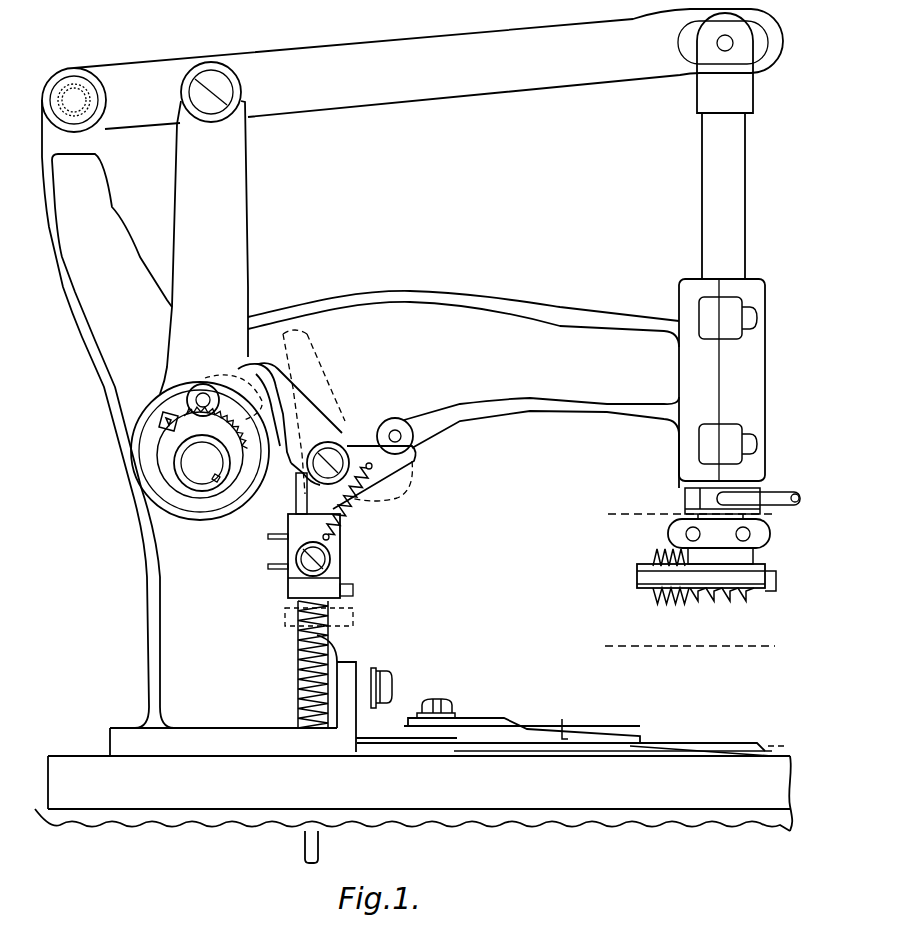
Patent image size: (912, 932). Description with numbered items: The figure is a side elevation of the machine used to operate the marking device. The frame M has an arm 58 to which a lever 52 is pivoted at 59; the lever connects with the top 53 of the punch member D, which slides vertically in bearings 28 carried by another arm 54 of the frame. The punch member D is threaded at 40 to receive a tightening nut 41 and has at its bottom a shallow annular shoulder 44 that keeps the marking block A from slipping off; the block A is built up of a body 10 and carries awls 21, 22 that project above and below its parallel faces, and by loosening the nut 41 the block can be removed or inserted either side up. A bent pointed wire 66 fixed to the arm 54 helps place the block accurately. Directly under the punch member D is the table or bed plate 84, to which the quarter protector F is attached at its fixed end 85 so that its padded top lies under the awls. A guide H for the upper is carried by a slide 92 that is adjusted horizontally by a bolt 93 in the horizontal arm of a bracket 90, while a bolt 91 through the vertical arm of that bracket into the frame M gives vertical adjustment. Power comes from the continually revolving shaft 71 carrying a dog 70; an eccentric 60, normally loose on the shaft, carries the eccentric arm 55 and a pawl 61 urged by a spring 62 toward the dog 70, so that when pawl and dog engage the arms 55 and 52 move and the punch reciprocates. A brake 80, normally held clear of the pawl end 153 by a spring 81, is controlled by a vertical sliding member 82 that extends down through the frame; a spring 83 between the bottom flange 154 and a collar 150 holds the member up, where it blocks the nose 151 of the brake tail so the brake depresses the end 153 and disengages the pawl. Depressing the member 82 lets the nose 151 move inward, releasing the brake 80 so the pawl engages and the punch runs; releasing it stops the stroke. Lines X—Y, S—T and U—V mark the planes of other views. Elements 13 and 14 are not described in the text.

The body 10 is at (640, 578).
The plate member 13 is at (640, 563).
The tooth 14 is at (697, 593).
The awl 21 is at (667, 547).
The awl 22 is at (660, 608).
The bearings 28 is at (730, 387).
The threaded portion 40 is at (710, 500).
The tightening nut 41 is at (767, 540).
The annular shoulder 44 is at (722, 611).
The lever 52 is at (403, 95).
The top of punch member 53 is at (708, 97).
The arm of frame 54 is at (603, 404).
The eccentric arm 55 is at (233, 210).
The arm of frame 58 is at (72, 268).
The pivot 59 is at (92, 100).
The eccentric 60 is at (162, 415).
The pawl 61 is at (172, 378).
The spring 62 is at (232, 482).
The bent pointed wire 66 is at (760, 497).
The dog 70 is at (167, 437).
The power shaft 71 is at (193, 463).
The brake 80 is at (300, 397).
The spring 81 is at (348, 507).
The vertical sliding member 82 is at (298, 500).
The spring 83 is at (283, 617).
The table or bed plate 84 is at (613, 778).
The fixed end 85 is at (703, 760).
The bracket 90 is at (367, 660).
The bolt or screw 91 is at (392, 677).
The slide 92 is at (507, 717).
The bolt or screw 93 is at (452, 703).
The collar 150 is at (293, 588).
The nose 151 is at (400, 452).
The end of pawl 153 is at (262, 382).
The bottom flange 154 is at (263, 733).
The marking block A is at (775, 582).
The punch member D is at (730, 220).
The quarter protector F is at (643, 794).
The guide H is at (652, 785).
The frame M is at (165, 608).
The section line S—T S is at (678, 648).
The section line S— T is at (791, 648).
The section line U—V U is at (560, 717).
The section line U— V is at (786, 747).
The section line X—Y X is at (679, 517).
The section line X— Y is at (789, 517).